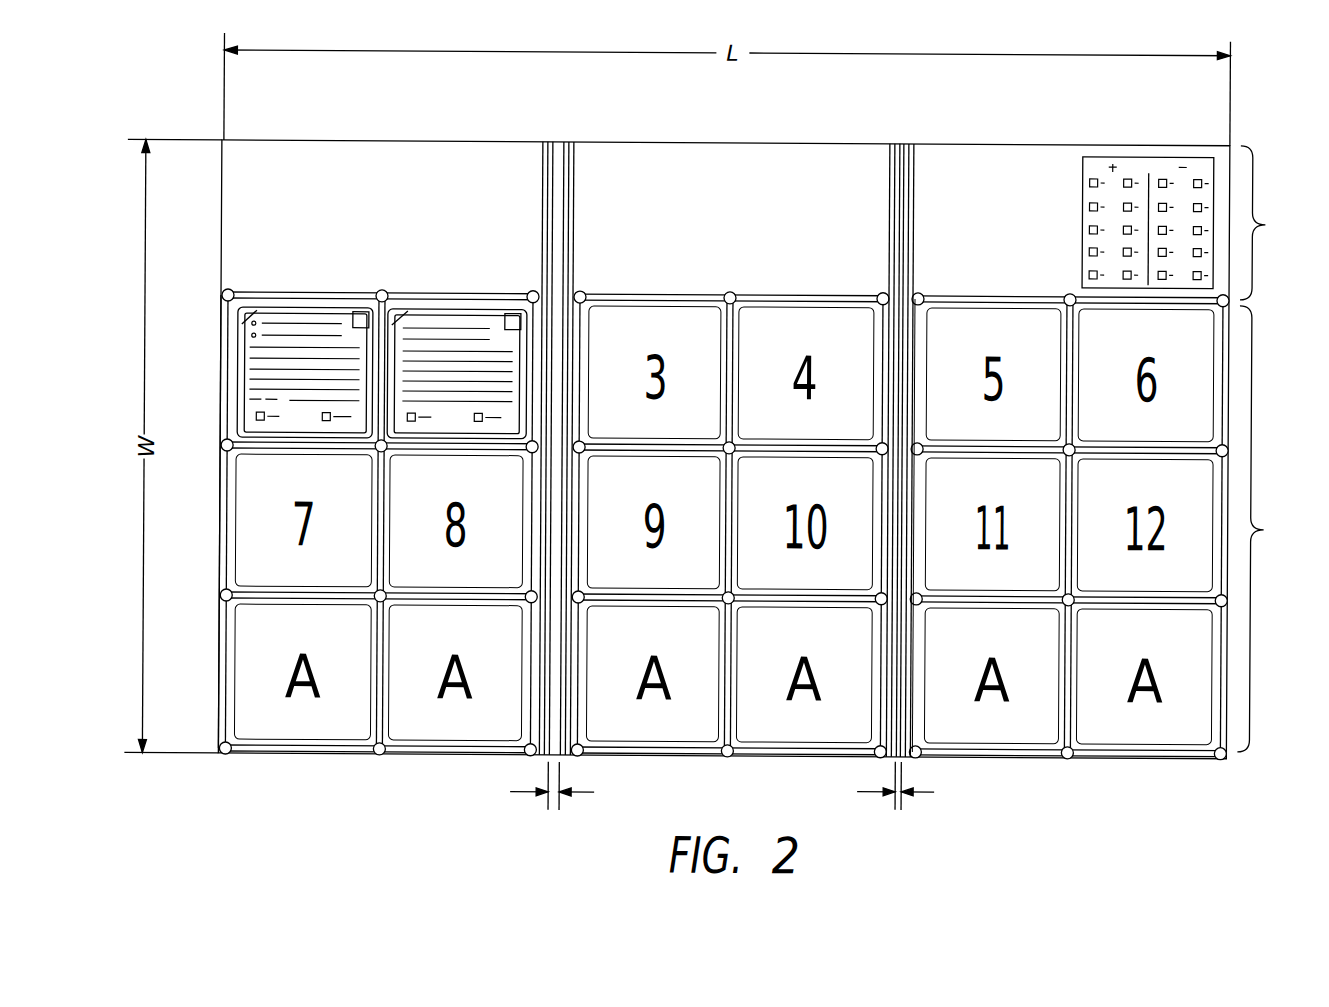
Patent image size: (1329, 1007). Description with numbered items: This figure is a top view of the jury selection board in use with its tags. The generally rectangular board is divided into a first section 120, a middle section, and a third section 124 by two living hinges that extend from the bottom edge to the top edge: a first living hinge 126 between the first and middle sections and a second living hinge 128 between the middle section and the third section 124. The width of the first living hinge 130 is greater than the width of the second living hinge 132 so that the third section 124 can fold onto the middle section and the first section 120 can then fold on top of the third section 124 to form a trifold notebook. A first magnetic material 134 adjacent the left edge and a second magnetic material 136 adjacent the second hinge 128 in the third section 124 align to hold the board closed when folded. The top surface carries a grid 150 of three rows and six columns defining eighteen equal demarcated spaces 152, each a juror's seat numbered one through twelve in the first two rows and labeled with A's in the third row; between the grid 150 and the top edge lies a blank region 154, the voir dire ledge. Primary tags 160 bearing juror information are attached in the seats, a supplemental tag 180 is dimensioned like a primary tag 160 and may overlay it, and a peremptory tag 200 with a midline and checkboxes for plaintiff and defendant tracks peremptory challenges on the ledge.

The first section 120 is at (333, 157).
The third section 124 is at (973, 158).
The first living hinge 126 is at (560, 160).
The second living hinge 128 is at (900, 146).
The width of the first living hinge 130 is at (572, 786).
The width of the second living hinge 132 is at (915, 786).
The first magnetic material 134 is at (226, 440).
The second magnetic material 136 is at (915, 443).
The grid 150 is at (1274, 529).
The demarcated space 152 is at (1102, 733).
The blank region 154 is at (1276, 223).
The primary tag 160 is at (306, 315).
The supplemental tag 180 is at (470, 313).
The peremptory tag 200 is at (1092, 160).